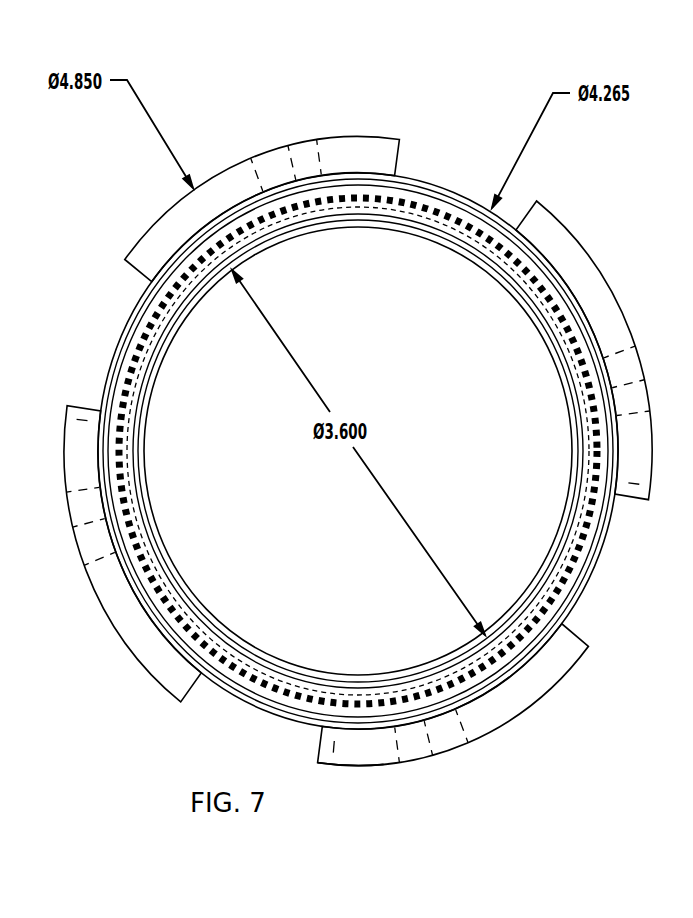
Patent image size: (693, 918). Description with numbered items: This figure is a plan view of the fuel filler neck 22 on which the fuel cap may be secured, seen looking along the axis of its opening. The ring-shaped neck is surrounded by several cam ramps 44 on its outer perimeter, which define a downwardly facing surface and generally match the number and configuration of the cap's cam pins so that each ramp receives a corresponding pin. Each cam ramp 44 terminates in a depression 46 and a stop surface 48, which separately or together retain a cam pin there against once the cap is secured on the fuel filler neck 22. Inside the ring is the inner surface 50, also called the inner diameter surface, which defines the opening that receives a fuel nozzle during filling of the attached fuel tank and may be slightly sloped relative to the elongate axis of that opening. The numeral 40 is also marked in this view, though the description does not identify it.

The fuel filler neck 22 is at (162, 702).
The shoe segment 40 is at (630, 503).
The cam ramps 44 is at (537, 695).
The depression 46 is at (368, 777).
The stop surface 48 is at (340, 773).
The inner surface 50 is at (563, 548).